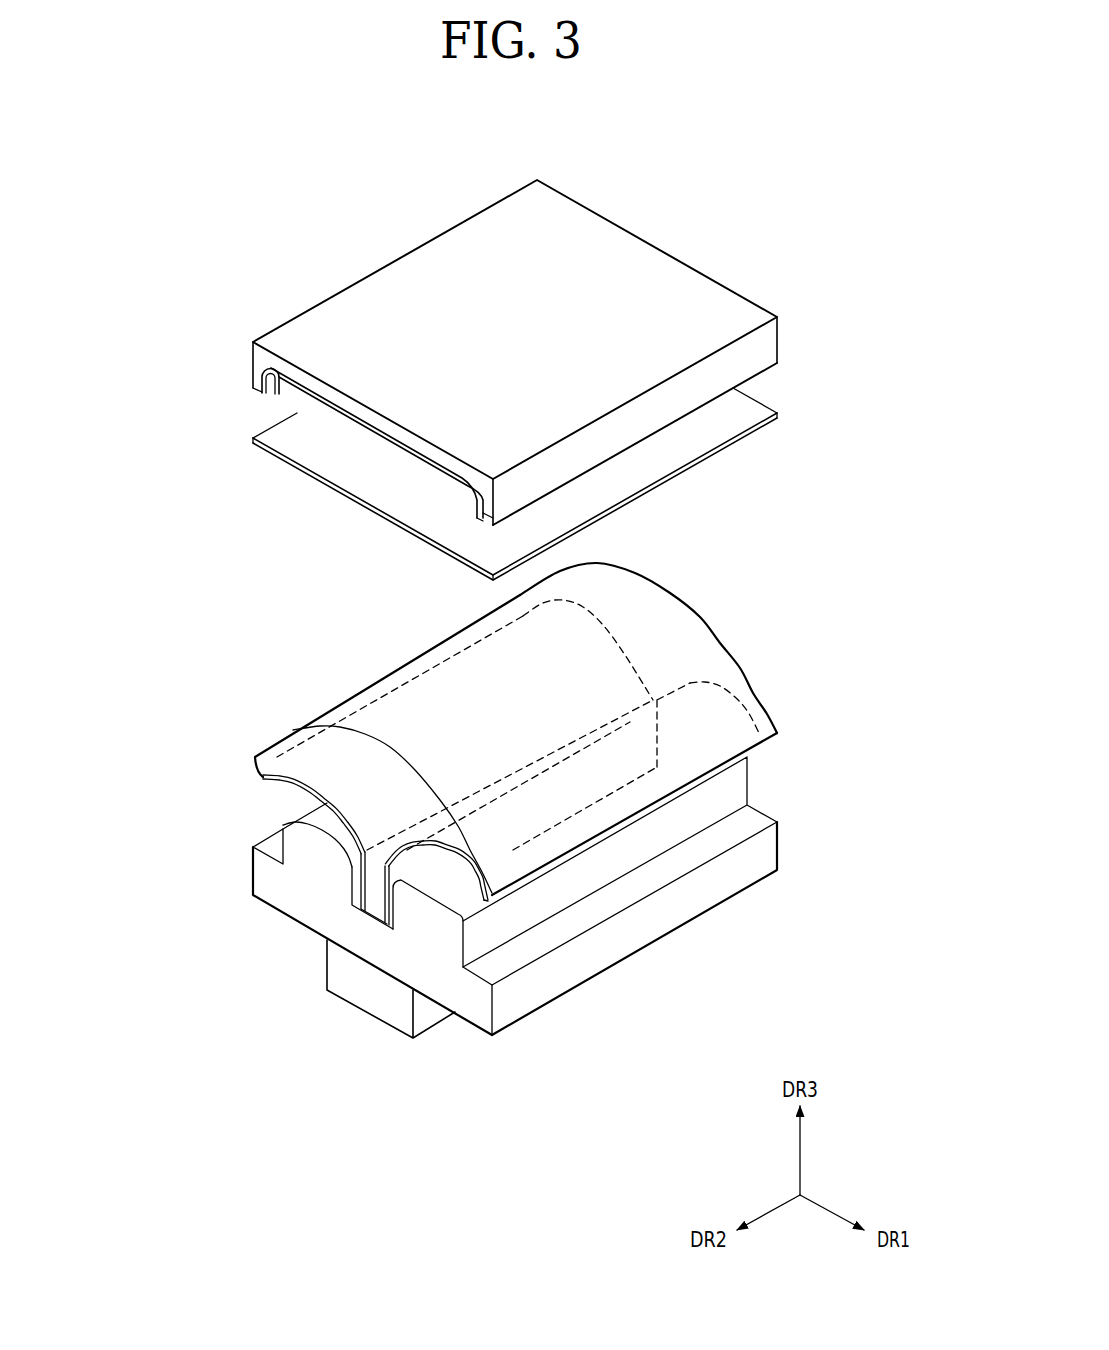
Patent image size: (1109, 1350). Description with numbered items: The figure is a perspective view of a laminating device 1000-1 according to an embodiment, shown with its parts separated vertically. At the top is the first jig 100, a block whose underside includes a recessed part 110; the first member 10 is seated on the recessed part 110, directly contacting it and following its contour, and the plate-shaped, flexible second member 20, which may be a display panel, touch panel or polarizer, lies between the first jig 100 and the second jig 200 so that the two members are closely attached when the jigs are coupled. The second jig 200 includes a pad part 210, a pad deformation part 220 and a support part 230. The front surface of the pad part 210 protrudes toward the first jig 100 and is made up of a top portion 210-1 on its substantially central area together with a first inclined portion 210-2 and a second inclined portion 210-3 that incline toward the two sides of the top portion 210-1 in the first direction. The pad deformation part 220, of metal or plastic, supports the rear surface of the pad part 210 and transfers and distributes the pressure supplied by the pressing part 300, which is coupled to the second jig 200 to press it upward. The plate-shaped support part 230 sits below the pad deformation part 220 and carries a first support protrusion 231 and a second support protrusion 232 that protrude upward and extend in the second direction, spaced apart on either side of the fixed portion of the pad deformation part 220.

The laminating device 1000-1 is at (732, 117).
The first jig 100 is at (571, 352).
The recessed part 110 is at (297, 378).
The second member 20 is at (778, 415).
The first member 10 is at (481, 511).
The second jig 200 is at (151, 675).
The pad part 210 is at (468, 791).
The top portion 210-1 is at (416, 768).
The first inclined portion 210-2 is at (366, 681).
The second inclined portion 210-3 is at (484, 857).
The pad deformation part 220 is at (257, 771).
The support part 230 is at (468, 936).
The first support protrusion 231 is at (297, 868).
The second support protrusion 232 is at (430, 930).
The pressing part 300 is at (337, 970).